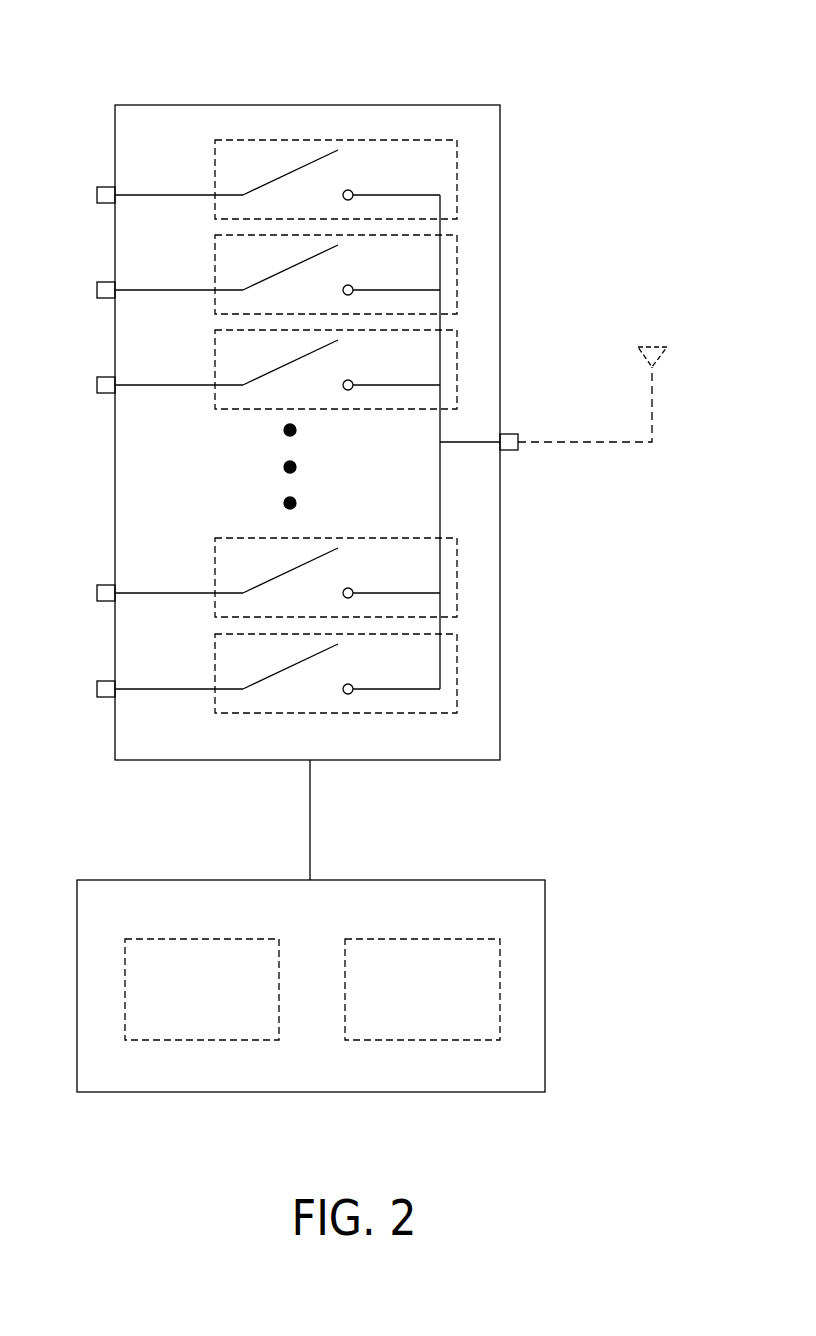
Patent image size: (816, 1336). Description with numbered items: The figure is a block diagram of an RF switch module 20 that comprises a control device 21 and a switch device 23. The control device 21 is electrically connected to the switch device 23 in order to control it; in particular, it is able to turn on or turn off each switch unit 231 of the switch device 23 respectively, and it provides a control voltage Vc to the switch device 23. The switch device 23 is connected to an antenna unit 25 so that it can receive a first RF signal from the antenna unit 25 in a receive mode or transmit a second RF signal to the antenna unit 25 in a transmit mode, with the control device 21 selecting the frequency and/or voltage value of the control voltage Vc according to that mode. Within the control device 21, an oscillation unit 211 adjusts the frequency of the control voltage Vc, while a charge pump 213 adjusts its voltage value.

The RF switch module 20 is at (76, 68).
The control device 21 is at (512, 888).
The oscillation unit 211 is at (178, 943).
The charge pump 213 is at (495, 987).
The switch device 23 is at (357, 117).
The switch unit 231 is at (452, 177).
The antenna unit 25 is at (656, 338).